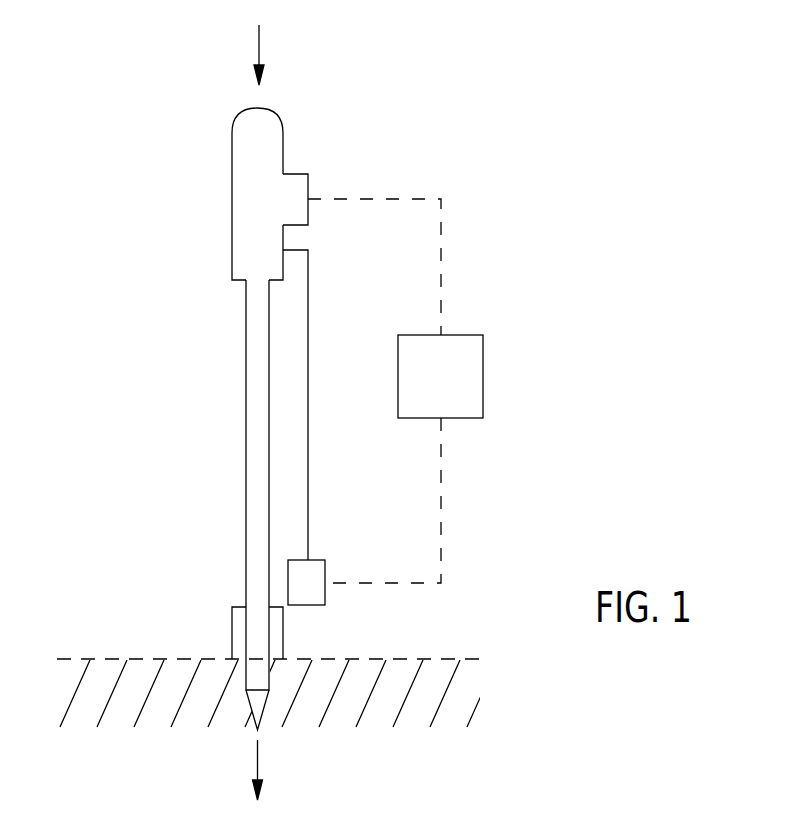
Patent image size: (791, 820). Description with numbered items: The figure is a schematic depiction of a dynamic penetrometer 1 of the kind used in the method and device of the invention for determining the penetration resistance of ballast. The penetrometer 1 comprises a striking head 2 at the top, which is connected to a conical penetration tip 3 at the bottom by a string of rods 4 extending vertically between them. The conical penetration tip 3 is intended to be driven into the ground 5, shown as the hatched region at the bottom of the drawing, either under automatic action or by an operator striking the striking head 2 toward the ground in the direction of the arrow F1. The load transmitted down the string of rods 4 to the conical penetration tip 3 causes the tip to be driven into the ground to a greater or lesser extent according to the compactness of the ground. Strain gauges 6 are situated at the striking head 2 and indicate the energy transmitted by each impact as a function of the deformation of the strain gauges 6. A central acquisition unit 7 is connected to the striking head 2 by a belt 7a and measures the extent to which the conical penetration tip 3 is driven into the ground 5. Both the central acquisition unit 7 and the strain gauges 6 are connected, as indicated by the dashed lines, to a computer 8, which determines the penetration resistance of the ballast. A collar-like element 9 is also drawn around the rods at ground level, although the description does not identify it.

The penetrometer 1 is at (126, 115).
The striking head 2 is at (304, 117).
The conical penetration tip 3 is at (217, 757).
The string of rods 4 is at (206, 399).
The ground 5 is at (376, 708).
The strain gauges 6 is at (310, 185).
The central acquisition unit 7 is at (325, 596).
The belt 7a is at (308, 320).
The computer 8 is at (483, 378).
The guide collar 9 is at (232, 633).
The arrow F1 is at (260, 45).